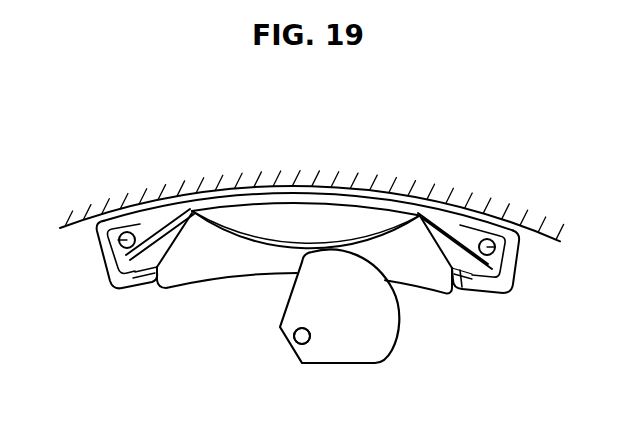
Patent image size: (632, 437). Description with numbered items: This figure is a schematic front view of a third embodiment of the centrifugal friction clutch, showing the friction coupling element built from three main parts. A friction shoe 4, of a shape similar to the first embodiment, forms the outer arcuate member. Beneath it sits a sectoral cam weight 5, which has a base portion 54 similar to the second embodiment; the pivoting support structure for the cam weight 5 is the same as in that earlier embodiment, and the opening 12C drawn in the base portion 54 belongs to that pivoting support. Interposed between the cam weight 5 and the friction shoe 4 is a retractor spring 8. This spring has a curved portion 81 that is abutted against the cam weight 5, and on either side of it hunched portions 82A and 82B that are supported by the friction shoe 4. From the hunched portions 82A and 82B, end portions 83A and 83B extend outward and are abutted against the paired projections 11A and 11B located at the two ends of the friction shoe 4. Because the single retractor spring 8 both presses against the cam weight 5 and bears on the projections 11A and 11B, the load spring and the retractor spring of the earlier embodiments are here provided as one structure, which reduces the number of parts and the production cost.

The friction shoe 4 is at (275, 197).
The sectoral cam weight 5 is at (386, 334).
The retractor spring 8 is at (255, 222).
The curved portion 81 is at (327, 250).
The hunched portion 82A is at (425, 212).
The hunched portion 82B is at (191, 210).
The end portion 83A is at (486, 246).
The end portion 83B is at (127, 240).
The projection 11A is at (508, 248).
The projection 11B is at (103, 258).
The pivot hole 12C is at (295, 338).
The base portion 54 is at (303, 340).